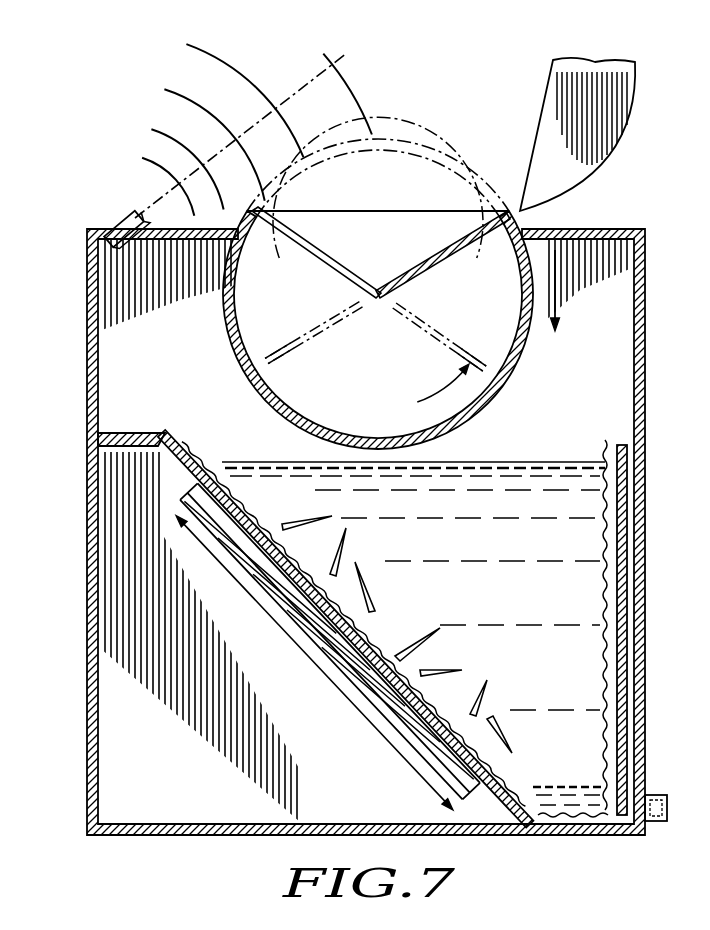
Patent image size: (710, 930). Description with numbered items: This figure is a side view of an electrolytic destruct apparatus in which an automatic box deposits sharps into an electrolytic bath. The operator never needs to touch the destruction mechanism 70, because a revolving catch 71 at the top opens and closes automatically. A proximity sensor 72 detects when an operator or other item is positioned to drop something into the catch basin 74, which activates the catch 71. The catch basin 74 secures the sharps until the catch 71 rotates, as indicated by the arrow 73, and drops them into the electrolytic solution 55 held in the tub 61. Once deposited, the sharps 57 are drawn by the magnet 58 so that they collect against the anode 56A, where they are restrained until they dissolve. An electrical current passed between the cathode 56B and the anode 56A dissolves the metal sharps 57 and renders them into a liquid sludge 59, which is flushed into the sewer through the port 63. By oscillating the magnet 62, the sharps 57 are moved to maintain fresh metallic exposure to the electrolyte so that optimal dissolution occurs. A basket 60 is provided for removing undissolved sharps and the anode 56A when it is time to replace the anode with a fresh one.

The destruction mechanism 70 is at (645, 300).
The revolving catch 71 is at (396, 211).
The proximity sensor 72 is at (132, 212).
The arrow 73 is at (557, 288).
The catch basin 74 is at (428, 273).
The electrolytic solution 55 is at (543, 434).
The anode 56A is at (209, 453).
The cathode 56B is at (620, 445).
The sharps 57 is at (343, 553).
The magnet 58 is at (274, 628).
The liquid sludge 59 is at (584, 753).
The basket 60 is at (600, 572).
The tub 61 is at (163, 437).
The magnet 62 is at (327, 681).
The port 63 is at (657, 794).